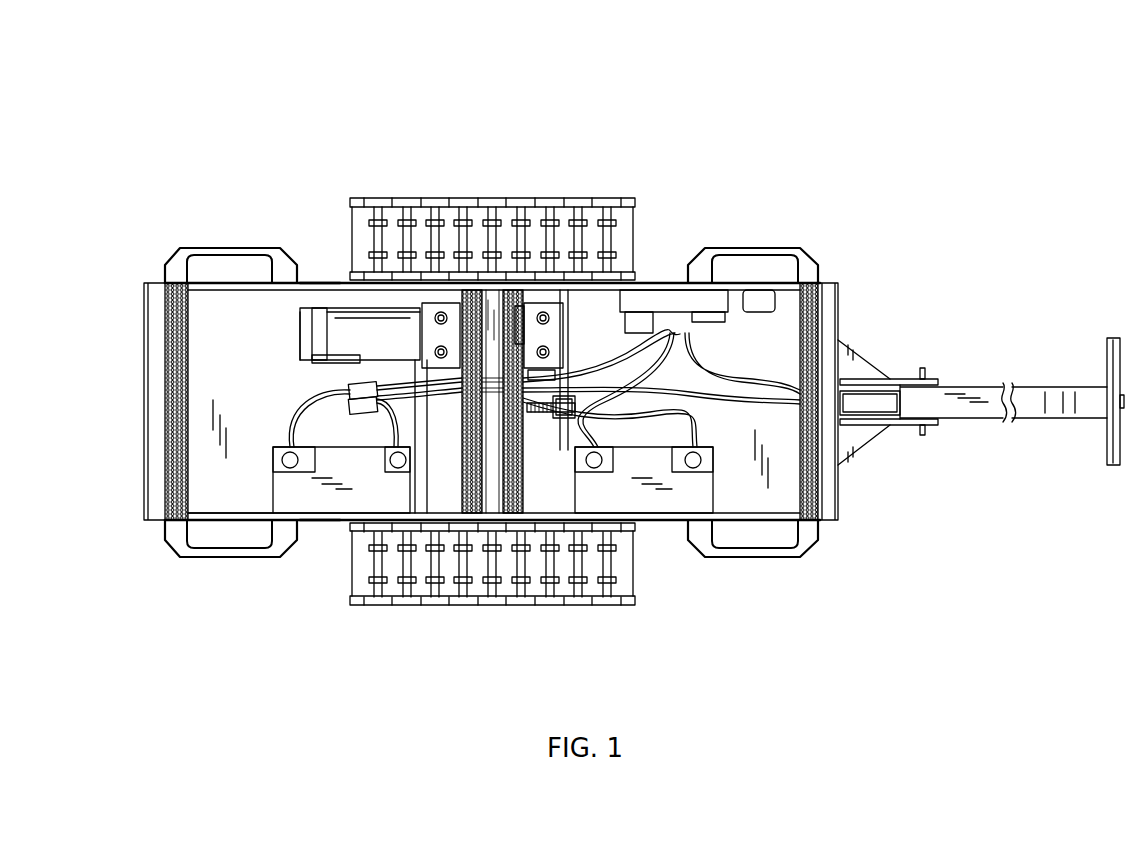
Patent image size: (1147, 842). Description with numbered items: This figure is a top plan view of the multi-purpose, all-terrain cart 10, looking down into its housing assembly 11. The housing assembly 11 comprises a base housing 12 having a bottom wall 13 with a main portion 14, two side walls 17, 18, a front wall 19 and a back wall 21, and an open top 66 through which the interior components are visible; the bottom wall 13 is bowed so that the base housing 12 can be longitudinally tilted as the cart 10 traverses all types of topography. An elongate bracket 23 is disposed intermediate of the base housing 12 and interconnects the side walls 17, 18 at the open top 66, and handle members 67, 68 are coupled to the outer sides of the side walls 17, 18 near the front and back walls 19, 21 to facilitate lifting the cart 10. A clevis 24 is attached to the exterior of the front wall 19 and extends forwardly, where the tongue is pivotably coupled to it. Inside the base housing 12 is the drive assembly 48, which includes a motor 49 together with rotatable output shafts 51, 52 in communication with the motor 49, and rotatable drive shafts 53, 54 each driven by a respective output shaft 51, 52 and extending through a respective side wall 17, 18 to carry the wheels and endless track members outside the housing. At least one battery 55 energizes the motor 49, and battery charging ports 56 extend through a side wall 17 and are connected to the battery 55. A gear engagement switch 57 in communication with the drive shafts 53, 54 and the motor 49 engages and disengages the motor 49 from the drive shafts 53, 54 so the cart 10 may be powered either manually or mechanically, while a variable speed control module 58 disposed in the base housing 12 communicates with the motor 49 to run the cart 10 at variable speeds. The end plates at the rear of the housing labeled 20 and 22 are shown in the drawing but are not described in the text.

The cart 10 is at (845, 106).
The housing assembly 11 is at (866, 264).
The base housing 12 is at (665, 520).
The bottom wall 13 is at (651, 347).
The main portion 14 is at (580, 303).
The side wall 17 is at (320, 300).
The side wall 18 is at (312, 517).
The front wall 19 is at (822, 322).
The rear end plate 20 is at (822, 487).
The back wall 21 is at (160, 340).
The front end wall 22 is at (160, 435).
The elongate bracket 23 is at (472, 300).
The clevis 24 is at (905, 425).
The drive assembly 48 is at (418, 303).
The motor 49 is at (362, 318).
The output shaft 51 is at (282, 316).
The output shaft 52 is at (527, 385).
The drive shaft 53 is at (420, 492).
The drive shaft 54 is at (663, 353).
The battery 55 is at (296, 495).
The battery charging ports 56 is at (455, 303).
The gear engagement switch 57 is at (515, 303).
The variable speed control module 58 is at (640, 300).
The open top 66 is at (210, 502).
The handle member 67 is at (762, 252).
The handle member 68 is at (775, 555).